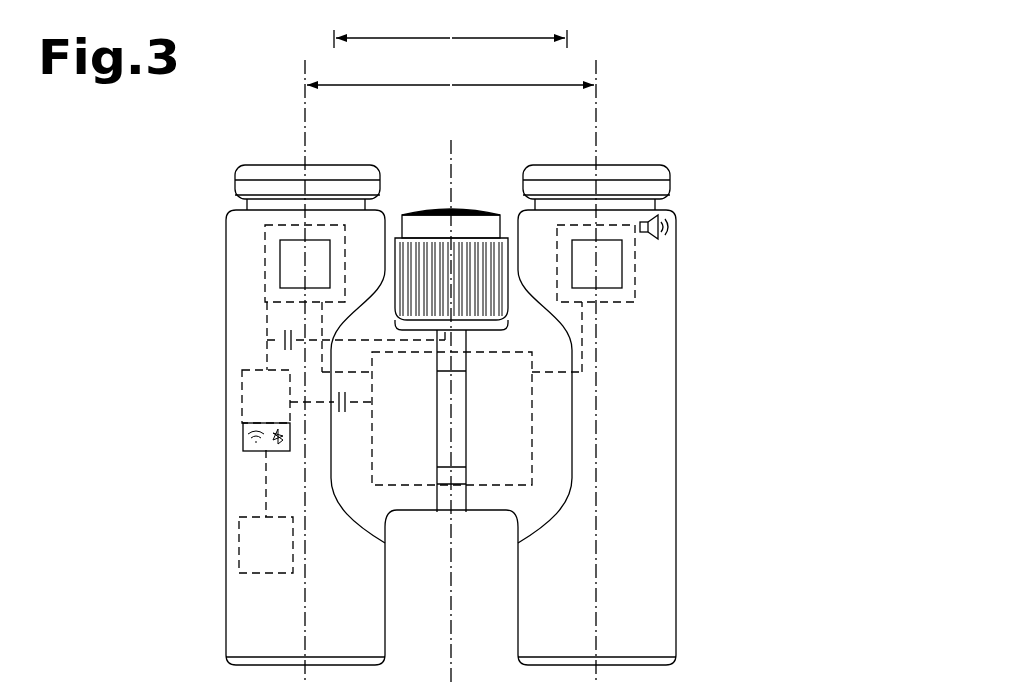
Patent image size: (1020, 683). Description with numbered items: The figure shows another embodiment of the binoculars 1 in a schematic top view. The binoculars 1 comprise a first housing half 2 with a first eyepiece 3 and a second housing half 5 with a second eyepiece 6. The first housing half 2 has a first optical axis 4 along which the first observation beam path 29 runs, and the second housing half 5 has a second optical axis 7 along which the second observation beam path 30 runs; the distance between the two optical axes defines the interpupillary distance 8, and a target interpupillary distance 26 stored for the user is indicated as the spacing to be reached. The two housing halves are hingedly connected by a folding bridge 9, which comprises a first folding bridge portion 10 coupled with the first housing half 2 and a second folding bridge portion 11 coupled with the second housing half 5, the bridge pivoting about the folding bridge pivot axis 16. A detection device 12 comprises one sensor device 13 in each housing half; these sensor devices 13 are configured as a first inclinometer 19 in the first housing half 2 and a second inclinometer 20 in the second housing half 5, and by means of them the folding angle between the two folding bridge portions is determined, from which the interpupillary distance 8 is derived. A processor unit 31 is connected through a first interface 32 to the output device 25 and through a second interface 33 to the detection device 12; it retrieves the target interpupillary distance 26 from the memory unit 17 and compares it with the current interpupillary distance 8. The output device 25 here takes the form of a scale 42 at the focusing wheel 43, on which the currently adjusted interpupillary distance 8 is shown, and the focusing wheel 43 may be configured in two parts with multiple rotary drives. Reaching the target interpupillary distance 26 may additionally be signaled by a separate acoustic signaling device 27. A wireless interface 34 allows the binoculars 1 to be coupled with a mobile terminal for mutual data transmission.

The binoculars 1 is at (808, 90).
The first housing half 2 is at (185, 240).
The first eyepiece 3 is at (262, 170).
The first optical axis 4 is at (258, 360).
The first observation beam path 29 is at (303, 120).
The second housing half 5 is at (708, 264).
The second eyepiece 6 is at (632, 172).
The second optical axis 7 is at (649, 360).
The second observation beam path 30 is at (599, 121).
The interpupillary distance 8 is at (456, 84).
The target interpupillary distance 26 is at (514, 37).
The folding bridge 9 is at (462, 522).
The first folding bridge portion 10 is at (387, 512).
The second folding bridge portion 11 is at (508, 513).
The detection device 12 is at (535, 440).
The sensor device 13 is at (265, 275).
The folding bridge pivot axis 16 is at (449, 192).
The memory unit 17 is at (258, 542).
The first inclinometer 19 is at (290, 248).
The second inclinometer 20 is at (612, 268).
The output device 25 is at (475, 169).
The scale 42 is at (464, 217).
The acoustic signaling device 27 is at (645, 223).
The processor unit 31 is at (240, 368).
The first interface 32 is at (263, 330).
The second interface 33 is at (335, 423).
The wireless interface 34 is at (242, 432).
The focusing wheel 43 is at (415, 242).